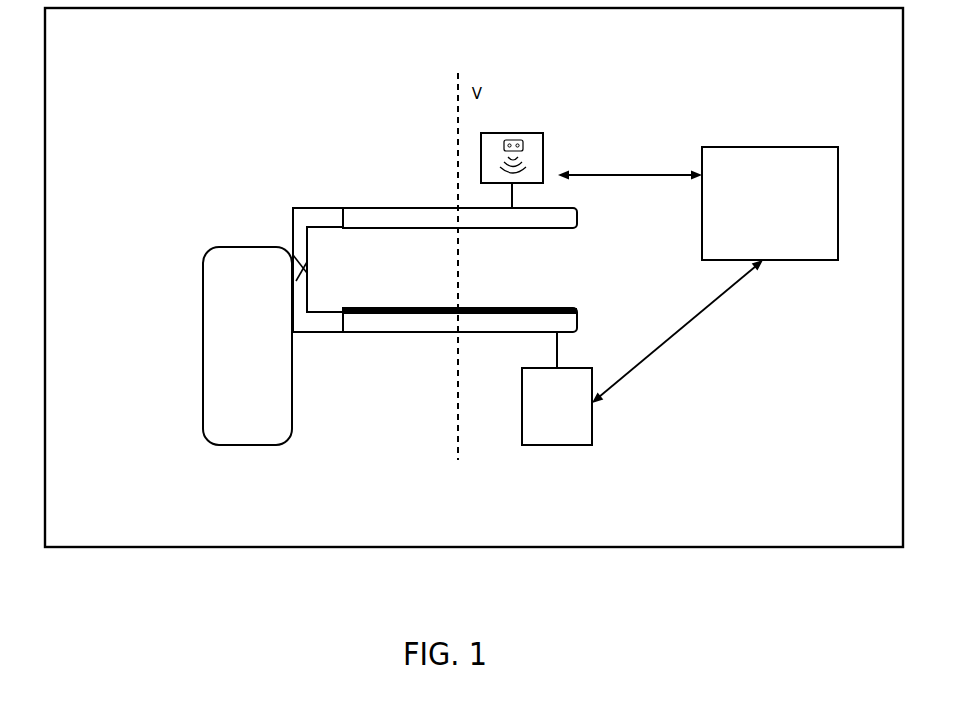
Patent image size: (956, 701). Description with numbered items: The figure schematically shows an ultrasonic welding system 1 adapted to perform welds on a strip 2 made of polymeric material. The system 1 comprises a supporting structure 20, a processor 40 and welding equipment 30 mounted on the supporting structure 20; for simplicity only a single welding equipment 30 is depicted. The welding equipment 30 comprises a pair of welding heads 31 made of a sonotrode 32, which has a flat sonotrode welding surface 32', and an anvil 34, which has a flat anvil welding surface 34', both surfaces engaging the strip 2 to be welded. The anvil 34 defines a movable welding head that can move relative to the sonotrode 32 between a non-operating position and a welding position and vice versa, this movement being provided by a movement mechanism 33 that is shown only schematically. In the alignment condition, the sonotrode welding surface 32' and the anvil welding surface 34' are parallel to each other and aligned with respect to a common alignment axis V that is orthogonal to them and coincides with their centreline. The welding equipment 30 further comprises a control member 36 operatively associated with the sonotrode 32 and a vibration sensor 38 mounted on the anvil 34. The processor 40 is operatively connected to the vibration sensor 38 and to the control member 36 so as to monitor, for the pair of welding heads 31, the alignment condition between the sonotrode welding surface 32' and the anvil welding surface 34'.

The ultrasonic welding system 1 is at (185, 551).
The strip 2 is at (360, 308).
The supporting structure 20 is at (230, 349).
The welding equipment 30 is at (473, 277).
The pair of welding heads 31 is at (594, 268).
The sonotrode 32 is at (460, 363).
The sonotrode welding surface 32' is at (615, 316).
The movement mechanism 33 is at (313, 208).
The anvil 34 is at (460, 178).
The anvil welding surface 34' is at (524, 247).
The control member 36 is at (544, 419).
The vibration sensor 38 is at (537, 133).
The processor 40 is at (755, 221).